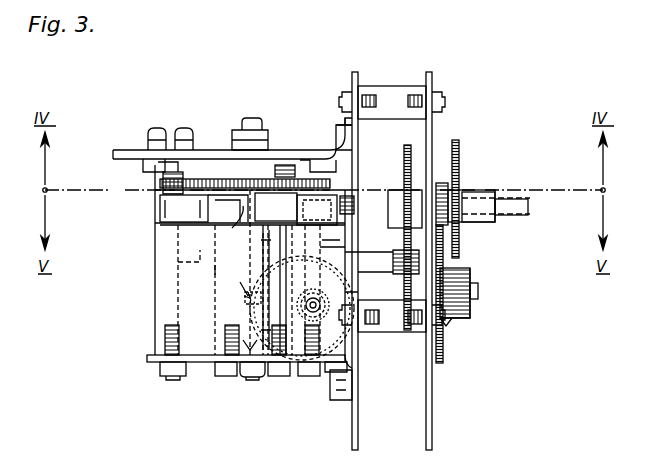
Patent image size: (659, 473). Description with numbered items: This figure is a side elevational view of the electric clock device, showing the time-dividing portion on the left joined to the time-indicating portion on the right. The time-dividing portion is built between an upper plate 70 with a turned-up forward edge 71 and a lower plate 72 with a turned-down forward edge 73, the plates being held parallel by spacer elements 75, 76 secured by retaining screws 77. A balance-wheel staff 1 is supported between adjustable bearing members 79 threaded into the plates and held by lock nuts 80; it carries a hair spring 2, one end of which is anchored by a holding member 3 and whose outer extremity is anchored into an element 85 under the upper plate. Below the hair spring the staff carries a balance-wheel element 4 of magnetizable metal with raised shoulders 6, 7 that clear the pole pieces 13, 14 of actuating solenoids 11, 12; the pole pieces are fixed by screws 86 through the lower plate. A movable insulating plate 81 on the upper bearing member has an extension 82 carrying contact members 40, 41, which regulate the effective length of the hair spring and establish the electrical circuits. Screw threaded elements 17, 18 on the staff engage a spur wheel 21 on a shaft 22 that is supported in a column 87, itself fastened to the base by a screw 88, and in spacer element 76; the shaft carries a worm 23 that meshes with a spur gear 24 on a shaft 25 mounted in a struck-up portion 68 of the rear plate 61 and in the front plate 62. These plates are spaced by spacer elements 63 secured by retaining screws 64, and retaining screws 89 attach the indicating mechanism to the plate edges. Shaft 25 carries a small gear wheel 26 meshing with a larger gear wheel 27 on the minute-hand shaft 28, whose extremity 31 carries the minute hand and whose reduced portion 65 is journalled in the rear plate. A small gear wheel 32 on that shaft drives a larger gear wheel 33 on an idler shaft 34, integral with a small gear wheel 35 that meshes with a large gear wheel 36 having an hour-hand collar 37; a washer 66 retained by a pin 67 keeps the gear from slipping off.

The balance-wheel staff 1 is at (264, 238).
The hair spring 2 is at (172, 201).
The holding member 3 is at (276, 207).
The balance-wheel element 4 is at (195, 206).
The raised circumferential shoulder 6 is at (168, 226).
The raised circumferential shoulder 7 is at (352, 206).
The actuating solenoid 11 is at (176, 263).
The actuating solenoid 12 is at (218, 268).
The pole piece 13 is at (240, 224).
The pole piece 14 is at (293, 200).
The screw threaded element 17 is at (245, 298).
The screw threaded element 18 is at (238, 283).
The spur wheel 21 is at (328, 302).
The shaft 22 is at (330, 294).
The worm 23 is at (284, 282).
The spur gear 24 is at (322, 248).
The shaft 25 is at (366, 255).
The small gear wheel 26 is at (410, 276).
The larger gear wheel 27 is at (405, 178).
The shaft 28 is at (380, 196).
The minute hand shaft 31 is at (528, 207).
The small gear wheel 32 is at (443, 182).
The larger gear wheel 33 is at (444, 356).
The idler shaft 34 is at (478, 291).
The small gear wheel 35 is at (456, 319).
The large gear wheel 36 is at (460, 161).
The collar 37 is at (478, 192).
The contact member 40 is at (163, 179).
The contact member 41 is at (196, 166).
The rear plate 61 is at (358, 437).
The front plate 62 is at (432, 437).
The spacer element 63 is at (392, 86).
The retaining screw 64 is at (343, 100).
The reduced portion 65 is at (354, 203).
The washer 66 is at (471, 318).
The pin 67 is at (472, 277).
The struck-up portion 68 is at (296, 300).
The upper plate 70 is at (330, 161).
The turned-up forward edge 71 is at (355, 133).
The lower plate 72 is at (150, 357).
The turned-down forward edge 73 is at (347, 398).
The spacer element 75 is at (155, 317).
The spacer element 76 is at (340, 366).
The retaining screw 77 is at (158, 150).
The adjustable bearing member 79 is at (228, 150).
The lock nut 80 is at (265, 131).
The movable plate 81 is at (113, 152).
The extension 82 is at (125, 162).
The anchoring element 85 is at (279, 164).
The screw 86 is at (236, 376).
The column 87 is at (368, 326).
The screw 88 is at (308, 377).
The retaining screw 89 is at (337, 128).